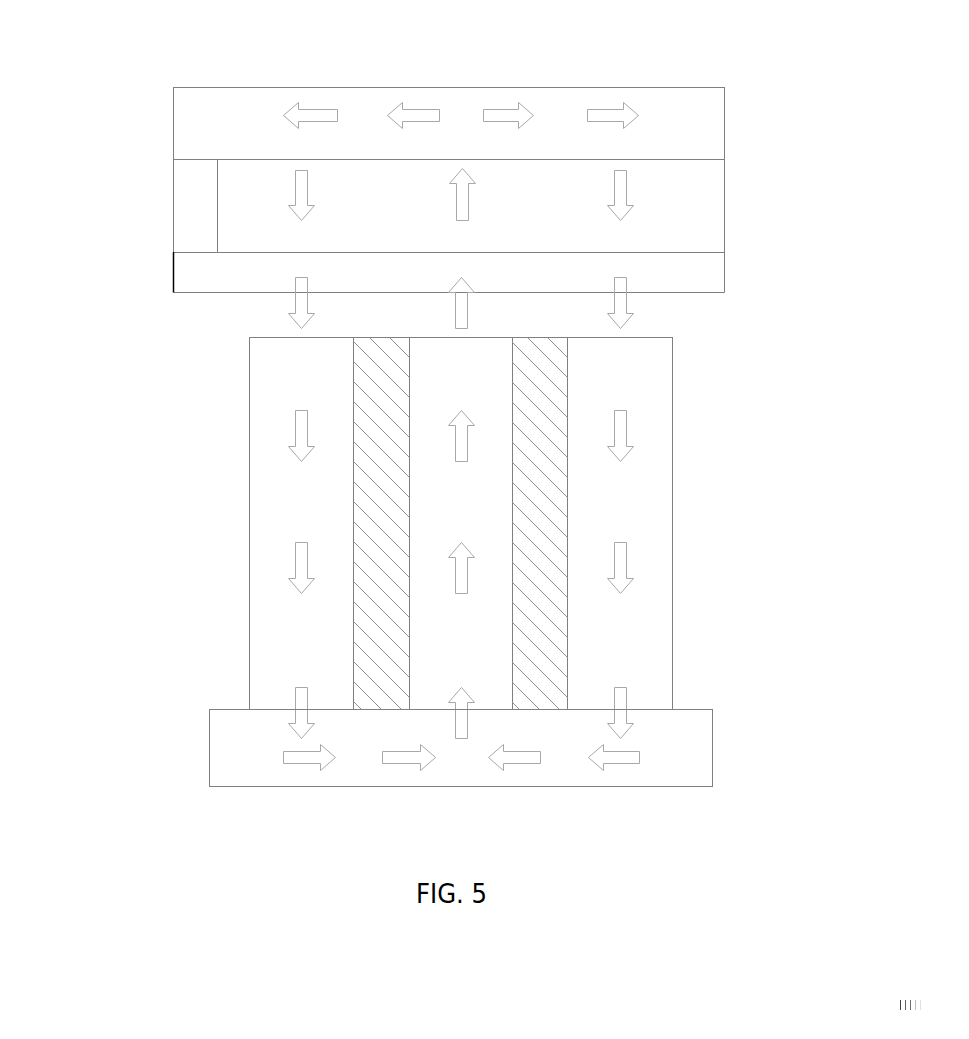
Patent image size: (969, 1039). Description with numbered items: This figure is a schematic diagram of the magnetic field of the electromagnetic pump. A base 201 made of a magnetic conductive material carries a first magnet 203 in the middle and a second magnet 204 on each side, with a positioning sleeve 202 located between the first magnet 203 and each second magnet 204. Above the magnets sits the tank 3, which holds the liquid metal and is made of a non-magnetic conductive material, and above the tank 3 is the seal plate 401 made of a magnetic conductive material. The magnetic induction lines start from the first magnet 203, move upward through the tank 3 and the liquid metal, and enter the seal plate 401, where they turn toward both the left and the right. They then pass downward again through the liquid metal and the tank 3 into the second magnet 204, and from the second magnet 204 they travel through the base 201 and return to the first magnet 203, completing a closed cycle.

The tank 3 is at (481, 163).
The seal plate 401 is at (422, 96).
The base 201 is at (538, 753).
The positioning sleeve 202 is at (501, 587).
The first magnet 203 is at (451, 562).
The second magnet 204 is at (448, 508).